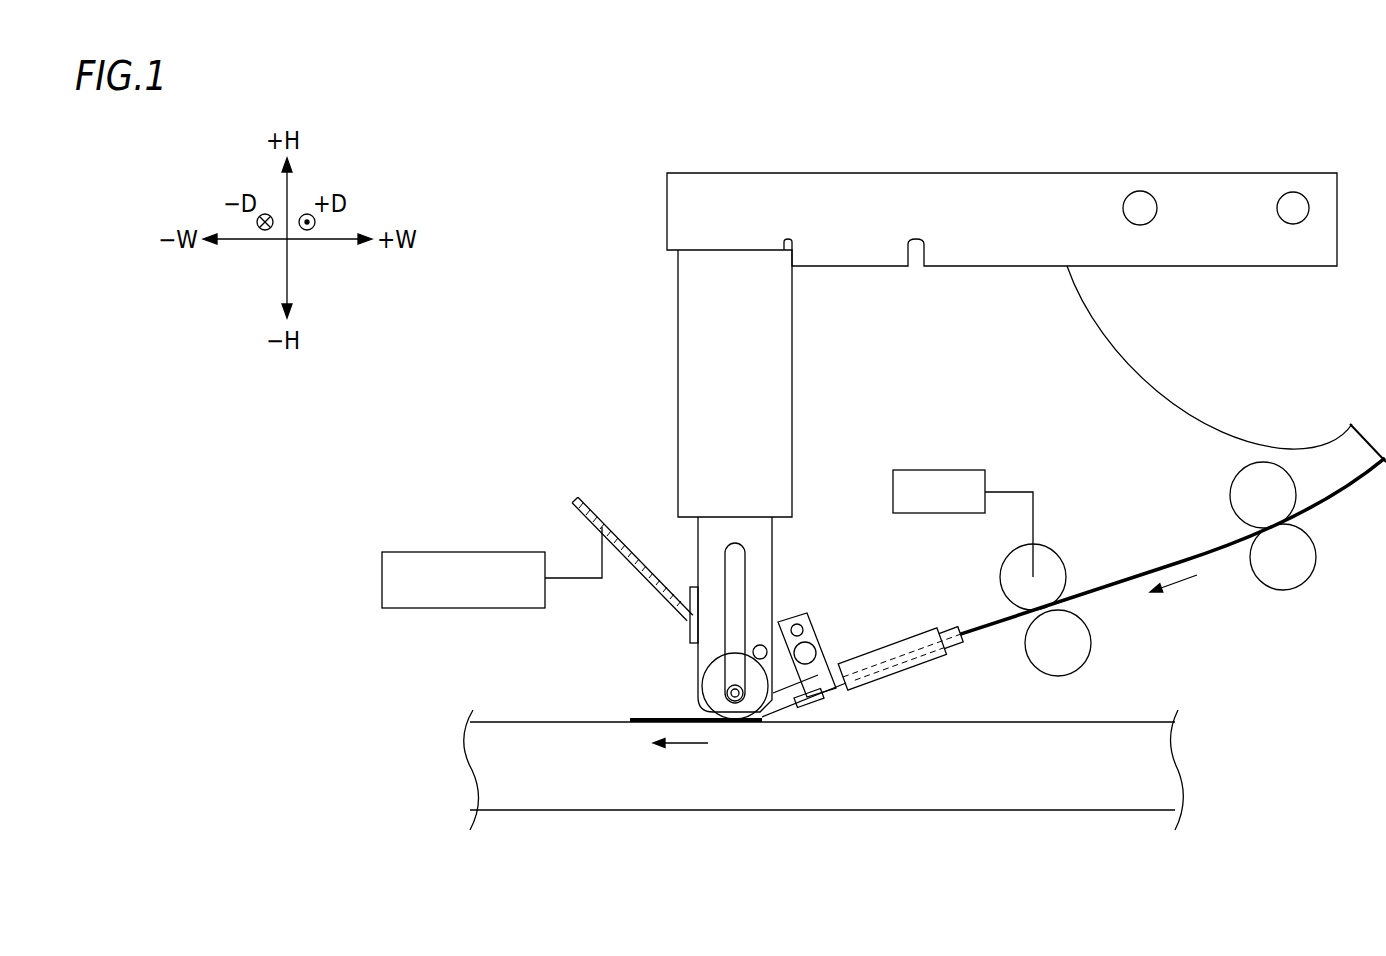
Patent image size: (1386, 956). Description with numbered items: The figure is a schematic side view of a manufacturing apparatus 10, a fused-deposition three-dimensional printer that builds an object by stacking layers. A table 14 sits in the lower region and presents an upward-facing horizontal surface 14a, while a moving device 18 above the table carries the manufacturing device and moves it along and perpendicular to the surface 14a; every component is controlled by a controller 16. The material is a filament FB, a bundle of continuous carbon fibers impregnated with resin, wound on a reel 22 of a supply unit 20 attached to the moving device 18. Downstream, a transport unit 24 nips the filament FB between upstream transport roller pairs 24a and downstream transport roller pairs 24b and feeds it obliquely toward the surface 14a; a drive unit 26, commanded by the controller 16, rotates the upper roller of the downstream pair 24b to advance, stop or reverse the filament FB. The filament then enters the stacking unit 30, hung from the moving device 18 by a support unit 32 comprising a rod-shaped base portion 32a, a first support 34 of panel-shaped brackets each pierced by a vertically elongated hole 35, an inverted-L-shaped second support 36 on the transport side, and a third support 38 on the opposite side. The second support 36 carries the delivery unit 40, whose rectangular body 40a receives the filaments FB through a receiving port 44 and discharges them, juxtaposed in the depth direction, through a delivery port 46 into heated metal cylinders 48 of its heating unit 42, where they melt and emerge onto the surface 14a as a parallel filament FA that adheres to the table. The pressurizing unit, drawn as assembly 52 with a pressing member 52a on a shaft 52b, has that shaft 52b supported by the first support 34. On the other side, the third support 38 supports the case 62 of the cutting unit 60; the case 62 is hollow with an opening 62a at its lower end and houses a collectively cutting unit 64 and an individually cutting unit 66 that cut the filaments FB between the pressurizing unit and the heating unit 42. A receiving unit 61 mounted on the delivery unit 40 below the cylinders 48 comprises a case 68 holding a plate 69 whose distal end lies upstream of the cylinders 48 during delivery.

The manufacturing apparatus 10 is at (525, 230).
The table 14 is at (824, 799).
The surface 14a is at (1100, 716).
The controller 16 is at (478, 550).
The moving device 18 is at (972, 186).
The supply unit 20 is at (1201, 364).
The reel 22 is at (1157, 397).
The transport unit 24 is at (1158, 587).
The upstream transport roller pairs 24a is at (1247, 513).
The downstream transport roller pairs 24b is at (1060, 577).
The drive unit 26 is at (940, 482).
The stacking unit 30 is at (633, 358).
The support unit 32 is at (799, 383).
The base portion 32a is at (793, 325).
The first support 34 is at (774, 548).
The hole 35 is at (738, 583).
The second support 36 is at (817, 628).
The third support 38 is at (692, 590).
The delivery unit 40 is at (913, 610).
The body 40a is at (915, 630).
The heating unit 42 is at (795, 718).
The receiving port 44 is at (962, 637).
The delivery port 46 is at (818, 700).
The cylinder 48 is at (800, 705).
The pressing roller unit 52 is at (646, 681).
The pressing roller 52a is at (707, 652).
The shaft 52b is at (703, 682).
The cutting unit 60 is at (632, 506).
The case 62 is at (594, 505).
The opening 62a is at (700, 630).
The collectively cutting unit 64 is at (606, 515).
The individually cutting unit 66 is at (622, 527).
The receiving unit 61 is at (883, 791).
The case 68 is at (935, 700).
The plate 69 is at (865, 700).
The filament FB is at (1170, 555).
The parallel filament FA is at (770, 723).